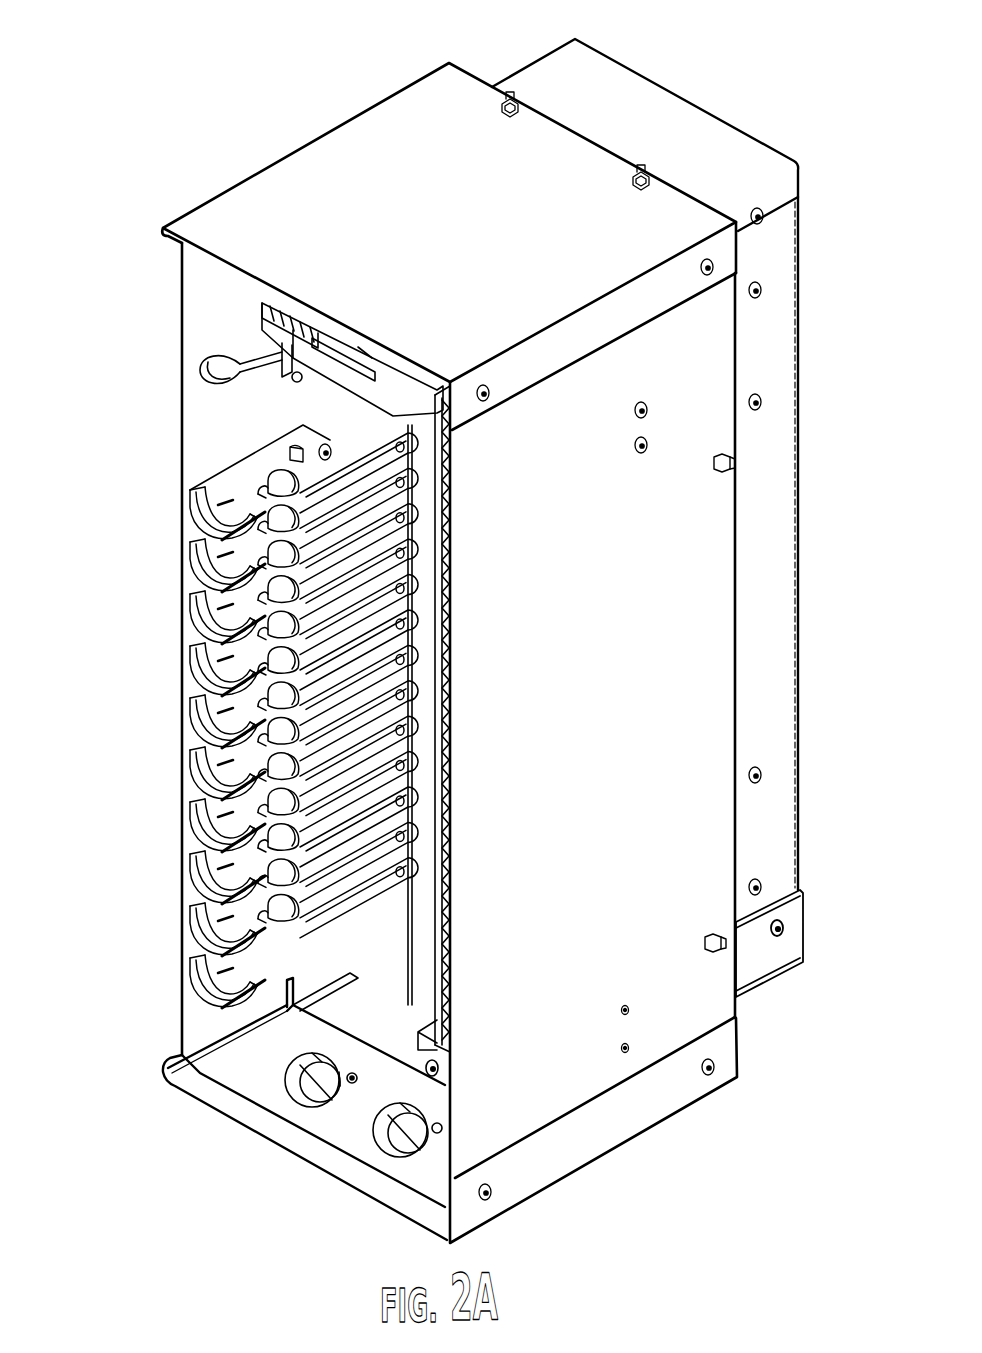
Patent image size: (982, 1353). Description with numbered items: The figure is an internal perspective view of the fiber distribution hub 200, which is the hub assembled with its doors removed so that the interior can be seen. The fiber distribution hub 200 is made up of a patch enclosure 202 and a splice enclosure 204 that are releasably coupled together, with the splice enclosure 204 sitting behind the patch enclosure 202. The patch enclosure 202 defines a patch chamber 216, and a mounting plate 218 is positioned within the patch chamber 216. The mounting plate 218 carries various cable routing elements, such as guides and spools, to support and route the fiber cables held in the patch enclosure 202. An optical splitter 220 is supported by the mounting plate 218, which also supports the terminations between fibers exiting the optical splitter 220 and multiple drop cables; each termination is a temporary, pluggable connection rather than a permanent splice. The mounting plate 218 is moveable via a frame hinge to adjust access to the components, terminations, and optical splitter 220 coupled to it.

The fiber distribution hub 200 is at (272, 60).
The patch enclosure 202 is at (280, 217).
The splice enclosure 204 is at (688, 137).
The patch chamber 216 is at (218, 433).
The mounting plate 218 is at (360, 995).
The optical splitter 220 is at (368, 357).